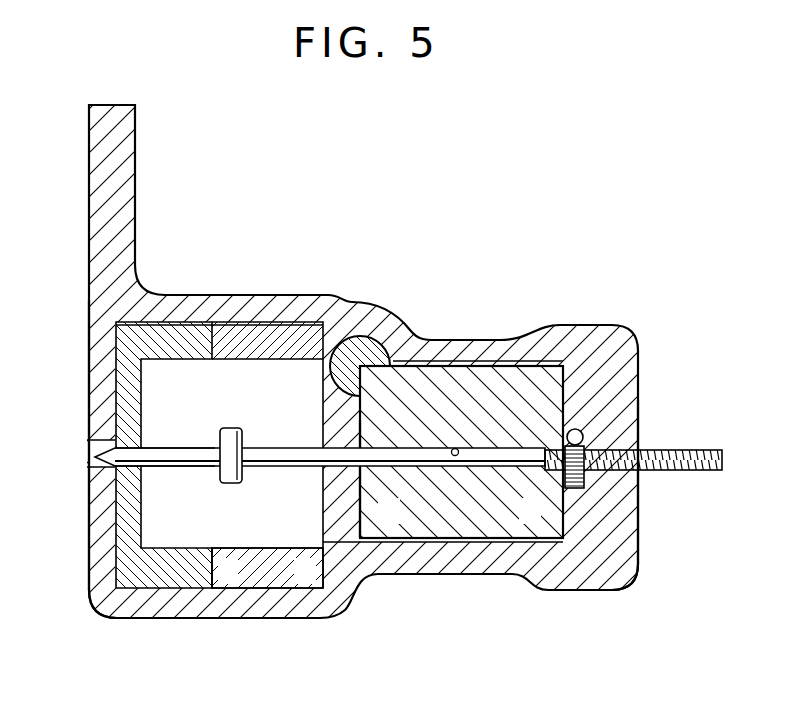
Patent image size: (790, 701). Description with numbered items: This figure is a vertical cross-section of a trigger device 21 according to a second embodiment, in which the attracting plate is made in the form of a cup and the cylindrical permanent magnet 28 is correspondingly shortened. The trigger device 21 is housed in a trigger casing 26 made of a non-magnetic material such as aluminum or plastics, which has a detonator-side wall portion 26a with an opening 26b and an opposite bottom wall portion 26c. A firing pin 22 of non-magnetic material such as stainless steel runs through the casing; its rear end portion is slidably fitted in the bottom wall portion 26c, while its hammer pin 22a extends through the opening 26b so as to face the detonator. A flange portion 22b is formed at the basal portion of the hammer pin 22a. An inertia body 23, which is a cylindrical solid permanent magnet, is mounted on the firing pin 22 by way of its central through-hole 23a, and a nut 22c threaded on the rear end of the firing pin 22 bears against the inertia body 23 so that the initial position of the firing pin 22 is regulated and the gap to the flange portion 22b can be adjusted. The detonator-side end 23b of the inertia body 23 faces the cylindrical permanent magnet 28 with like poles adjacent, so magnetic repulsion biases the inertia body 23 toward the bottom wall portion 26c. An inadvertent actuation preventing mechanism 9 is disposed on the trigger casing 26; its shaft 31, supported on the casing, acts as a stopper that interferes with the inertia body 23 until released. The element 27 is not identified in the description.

The inadvertent actuation preventing mechanism 9 is at (359, 322).
The trigger device 21 is at (454, 296).
The firing pin 22 is at (283, 480).
The hammer pin 22a is at (177, 453).
The flange portion 22b is at (232, 487).
The nut 22c is at (585, 432).
The inertia body 23 is at (487, 377).
The through-hole 23a is at (454, 448).
The detonator-side end 23b is at (358, 513).
The trigger casing 26 is at (586, 318).
The detonator-side wall portion 26a is at (95, 540).
The opening 26b is at (90, 457).
The bottom wall portion 26c is at (630, 552).
The yoke 27 is at (123, 378).
The cylindrical permanent magnet 28 is at (252, 332).
The shaft 31 is at (336, 390).